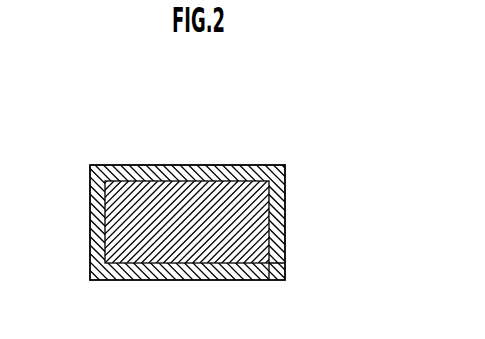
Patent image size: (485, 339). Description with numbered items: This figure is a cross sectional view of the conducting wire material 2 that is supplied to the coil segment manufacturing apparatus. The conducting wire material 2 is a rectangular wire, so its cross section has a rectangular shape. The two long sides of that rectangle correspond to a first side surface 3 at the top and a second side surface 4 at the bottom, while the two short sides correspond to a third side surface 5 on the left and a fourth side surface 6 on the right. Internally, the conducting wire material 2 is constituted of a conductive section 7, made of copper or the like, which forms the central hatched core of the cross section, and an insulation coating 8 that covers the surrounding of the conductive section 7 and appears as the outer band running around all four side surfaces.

The conducting wire material 2 is at (243, 139).
The first side surface 3 is at (169, 165).
The second side surface 4 is at (182, 280).
The third side surface 5 is at (90, 220).
The fourth side surface 6 is at (285, 221).
The conductive section 7 is at (240, 245).
The insulation coating 8 is at (275, 272).